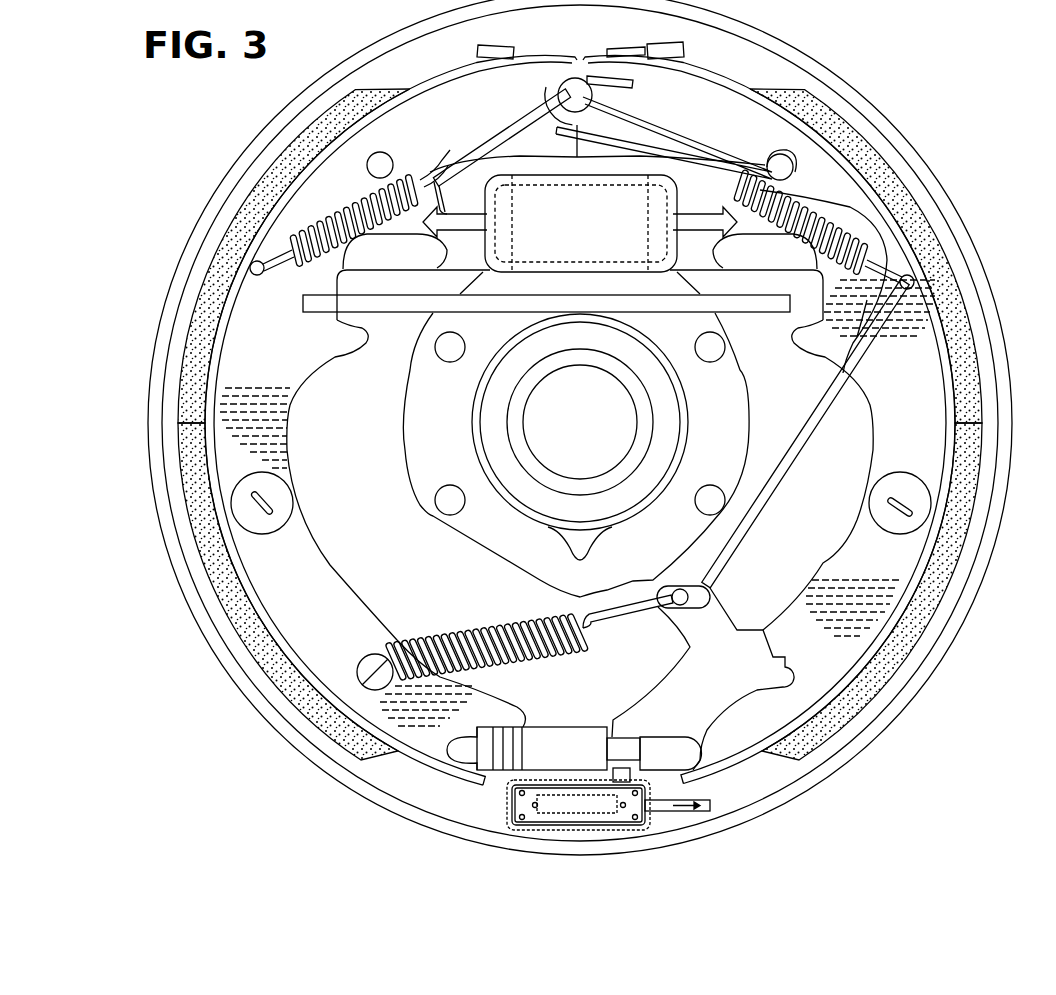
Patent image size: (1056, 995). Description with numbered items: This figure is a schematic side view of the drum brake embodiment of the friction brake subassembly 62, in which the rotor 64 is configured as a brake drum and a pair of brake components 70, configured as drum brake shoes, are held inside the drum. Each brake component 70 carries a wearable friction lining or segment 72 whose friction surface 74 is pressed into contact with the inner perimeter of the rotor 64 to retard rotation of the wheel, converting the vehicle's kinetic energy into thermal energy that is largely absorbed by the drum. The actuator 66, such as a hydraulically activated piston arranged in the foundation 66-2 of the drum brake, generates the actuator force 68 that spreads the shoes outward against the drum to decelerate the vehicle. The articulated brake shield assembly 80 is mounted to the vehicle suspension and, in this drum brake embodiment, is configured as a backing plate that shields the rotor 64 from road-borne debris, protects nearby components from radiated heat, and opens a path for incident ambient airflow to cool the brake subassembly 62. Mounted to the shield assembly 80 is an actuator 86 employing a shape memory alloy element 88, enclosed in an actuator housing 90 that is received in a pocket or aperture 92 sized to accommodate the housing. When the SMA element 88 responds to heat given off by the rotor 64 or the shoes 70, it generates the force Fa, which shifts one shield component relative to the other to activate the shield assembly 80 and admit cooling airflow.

The friction brake subassembly 62 is at (943, 196).
The rotor 64 is at (653, 850).
The actuator 66 is at (570, 226).
The foundation 66-2 is at (350, 533).
The actuator force 68 is at (450, 226).
The brake component 70 is at (976, 364).
The friction lining or segment 72 is at (290, 165).
The friction surface 74 is at (297, 718).
The articulated brake shield assembly 80 is at (447, 800).
The actuator 86 is at (563, 823).
The SMA element 88 is at (573, 812).
The actuator housing 90 is at (513, 797).
The pocket or aperture 92 is at (610, 822).
The force Fa is at (687, 800).